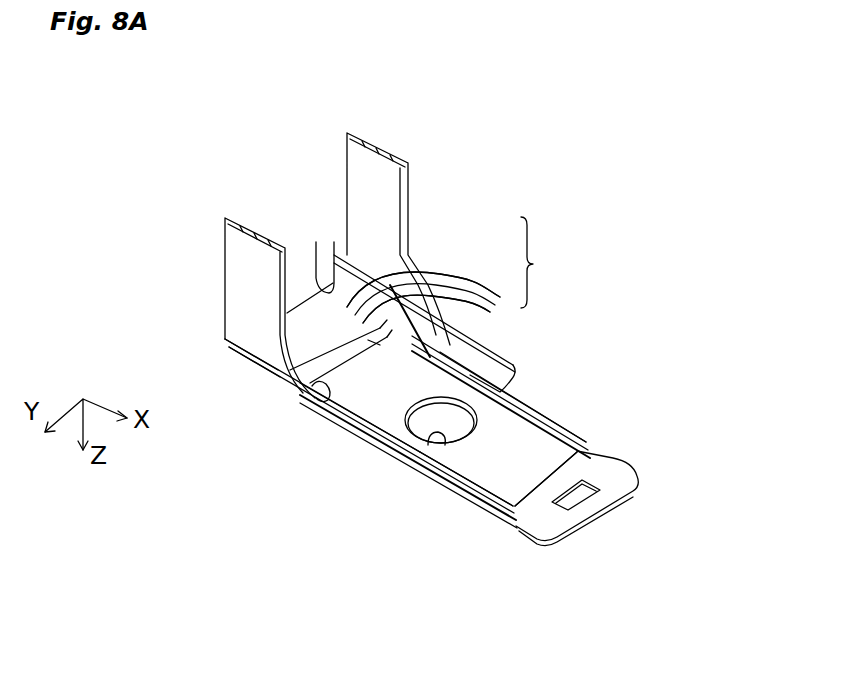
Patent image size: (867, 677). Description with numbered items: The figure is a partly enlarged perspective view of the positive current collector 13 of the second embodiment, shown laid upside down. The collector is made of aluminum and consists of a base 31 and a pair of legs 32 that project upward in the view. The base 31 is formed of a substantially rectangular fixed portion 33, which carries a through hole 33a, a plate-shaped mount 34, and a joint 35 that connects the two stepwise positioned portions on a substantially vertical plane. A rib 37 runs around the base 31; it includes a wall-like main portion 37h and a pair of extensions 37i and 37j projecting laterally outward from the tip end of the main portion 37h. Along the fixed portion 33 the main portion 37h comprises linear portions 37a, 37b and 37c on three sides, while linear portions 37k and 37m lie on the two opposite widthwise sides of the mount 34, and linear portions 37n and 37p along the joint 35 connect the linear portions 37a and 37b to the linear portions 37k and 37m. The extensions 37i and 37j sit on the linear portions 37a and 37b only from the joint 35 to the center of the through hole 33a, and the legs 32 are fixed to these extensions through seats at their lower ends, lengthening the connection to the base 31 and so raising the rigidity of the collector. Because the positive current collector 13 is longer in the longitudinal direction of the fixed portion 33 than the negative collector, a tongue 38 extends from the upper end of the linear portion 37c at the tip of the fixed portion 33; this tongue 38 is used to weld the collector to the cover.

The positive current collector 13 is at (592, 157).
The base 31 is at (459, 270).
The leg 32 is at (347, 174).
The fixed portion 33 is at (437, 322).
The through hole 33a is at (443, 448).
The mount 34 is at (397, 278).
The joint 35 is at (403, 300).
The rib 37 is at (580, 433).
The main portion 37h is at (386, 328).
The linear portion 37a is at (578, 421).
The linear portion 37b is at (463, 487).
The linear portion 37c is at (537, 488).
The extension 37i is at (480, 371).
The extension 37j is at (343, 407).
The linear portion 37k is at (316, 288).
The linear portion 37m is at (233, 342).
The linear portion 37n is at (372, 342).
The linear portion 37p is at (322, 392).
The tongue 38 is at (607, 507).